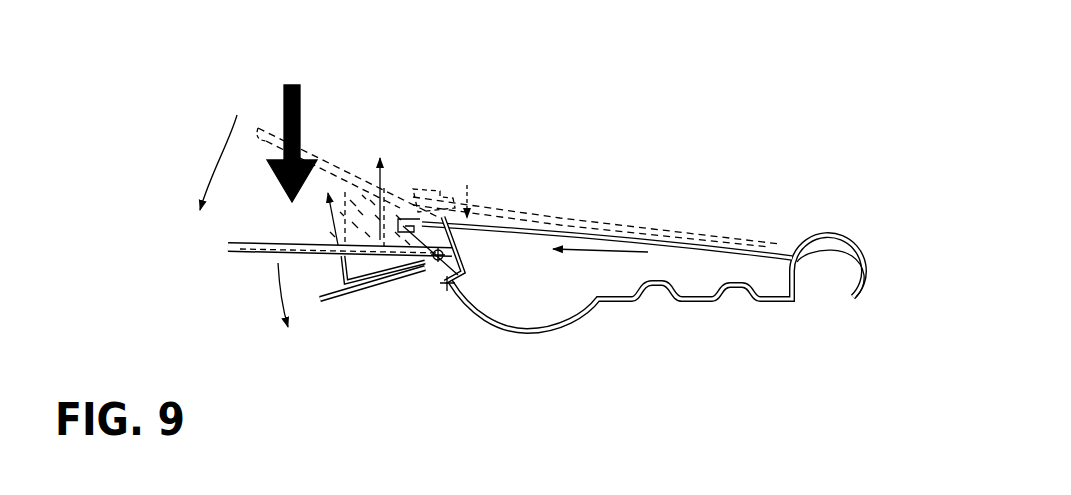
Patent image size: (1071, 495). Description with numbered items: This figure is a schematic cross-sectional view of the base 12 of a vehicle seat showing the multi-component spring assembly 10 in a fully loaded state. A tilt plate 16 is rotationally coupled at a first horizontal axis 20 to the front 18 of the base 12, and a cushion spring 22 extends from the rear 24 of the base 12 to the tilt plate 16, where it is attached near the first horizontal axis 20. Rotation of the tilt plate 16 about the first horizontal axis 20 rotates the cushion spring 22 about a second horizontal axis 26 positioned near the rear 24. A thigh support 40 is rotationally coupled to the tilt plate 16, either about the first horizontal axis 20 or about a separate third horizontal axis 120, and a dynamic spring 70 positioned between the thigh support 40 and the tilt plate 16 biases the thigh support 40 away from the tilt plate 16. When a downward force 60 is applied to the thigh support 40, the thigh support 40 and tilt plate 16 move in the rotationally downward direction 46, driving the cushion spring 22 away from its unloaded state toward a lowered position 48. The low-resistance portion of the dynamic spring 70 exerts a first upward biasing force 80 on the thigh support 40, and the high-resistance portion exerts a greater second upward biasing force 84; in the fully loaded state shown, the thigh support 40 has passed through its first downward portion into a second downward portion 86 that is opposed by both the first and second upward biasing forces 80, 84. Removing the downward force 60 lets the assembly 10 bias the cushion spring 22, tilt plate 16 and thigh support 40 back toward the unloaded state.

The multi-component spring assembly 10 is at (750, 148).
The base 12 is at (738, 306).
The tilt plate 16 is at (405, 280).
The front 18 is at (478, 321).
The first horizontal axis 20 is at (450, 280).
The cushion spring 22 is at (677, 238).
The rear 24 is at (823, 255).
The second horizontal axis 26 is at (790, 250).
The thigh support 40 is at (226, 245).
The rotationally downward direction 46 is at (472, 185).
The lowered position 48 is at (568, 228).
The downward force 60 is at (298, 123).
The dynamic spring 70 is at (331, 304).
The first upward biasing force 80 is at (323, 223).
The second upward biasing force 84 is at (380, 195).
The second downward portion 86 is at (262, 275).
The third horizontal axis 120 is at (463, 252).